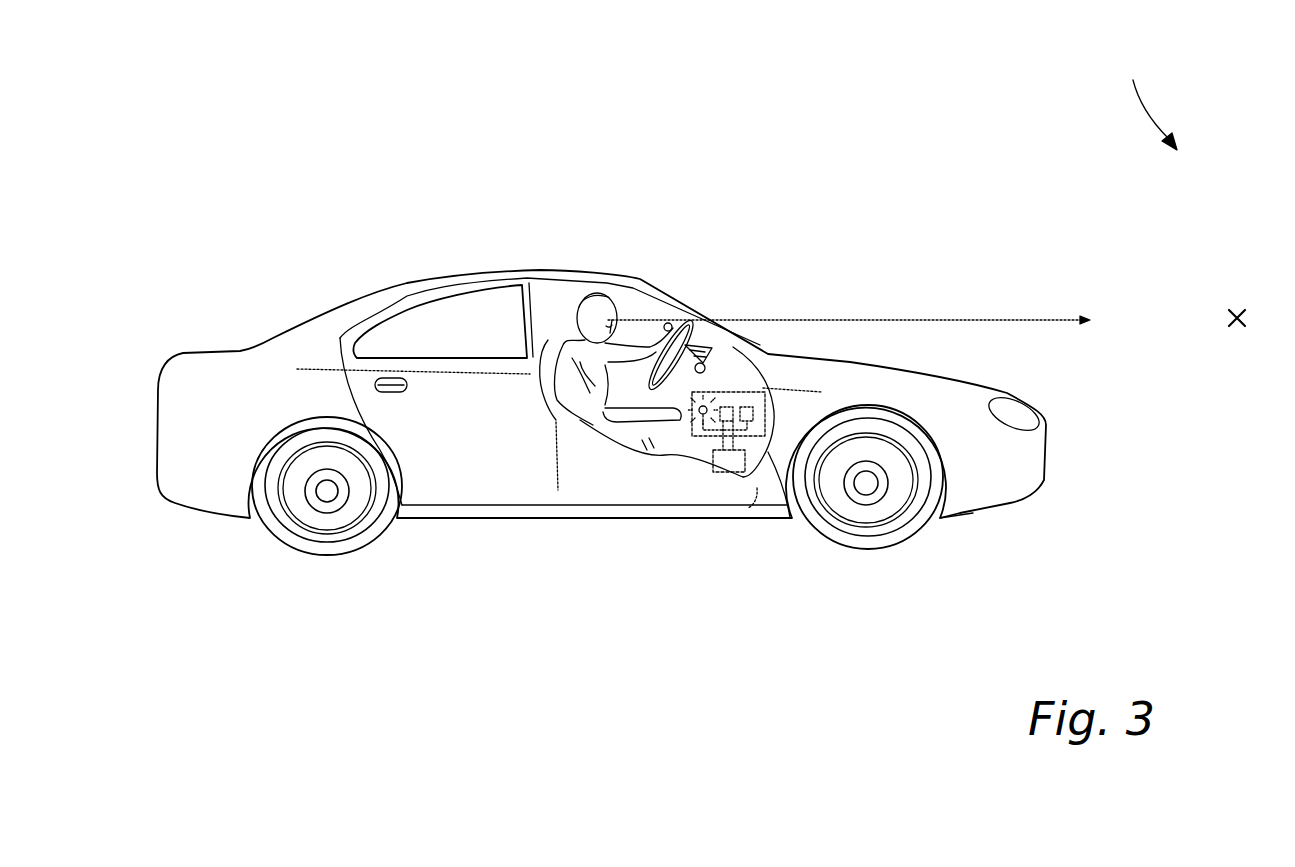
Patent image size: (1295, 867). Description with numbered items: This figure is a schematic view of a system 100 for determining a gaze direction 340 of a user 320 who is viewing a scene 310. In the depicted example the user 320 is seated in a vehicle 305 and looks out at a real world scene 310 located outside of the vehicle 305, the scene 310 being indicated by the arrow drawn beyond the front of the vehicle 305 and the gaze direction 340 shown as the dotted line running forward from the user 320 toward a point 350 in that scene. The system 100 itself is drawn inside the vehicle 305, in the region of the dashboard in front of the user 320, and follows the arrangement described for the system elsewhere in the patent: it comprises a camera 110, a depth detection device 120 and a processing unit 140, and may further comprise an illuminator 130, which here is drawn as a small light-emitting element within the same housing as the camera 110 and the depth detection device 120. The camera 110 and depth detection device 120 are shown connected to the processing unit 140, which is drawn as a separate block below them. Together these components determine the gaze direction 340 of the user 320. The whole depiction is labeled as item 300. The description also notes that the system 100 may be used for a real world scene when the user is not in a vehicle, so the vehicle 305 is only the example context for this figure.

The system 100 is at (767, 460).
The camera 110 is at (753, 413).
The depth detection device 120 is at (727, 408).
The illuminator 130 is at (703, 413).
The processing unit 140 is at (725, 472).
The vehicle 300 is at (760, 147).
The vehicle 305 is at (973, 513).
The scene 310 is at (1141, 98).
The user 320 is at (596, 293).
The gaze direction 340 is at (1002, 320).
The target point 350 is at (1234, 311).